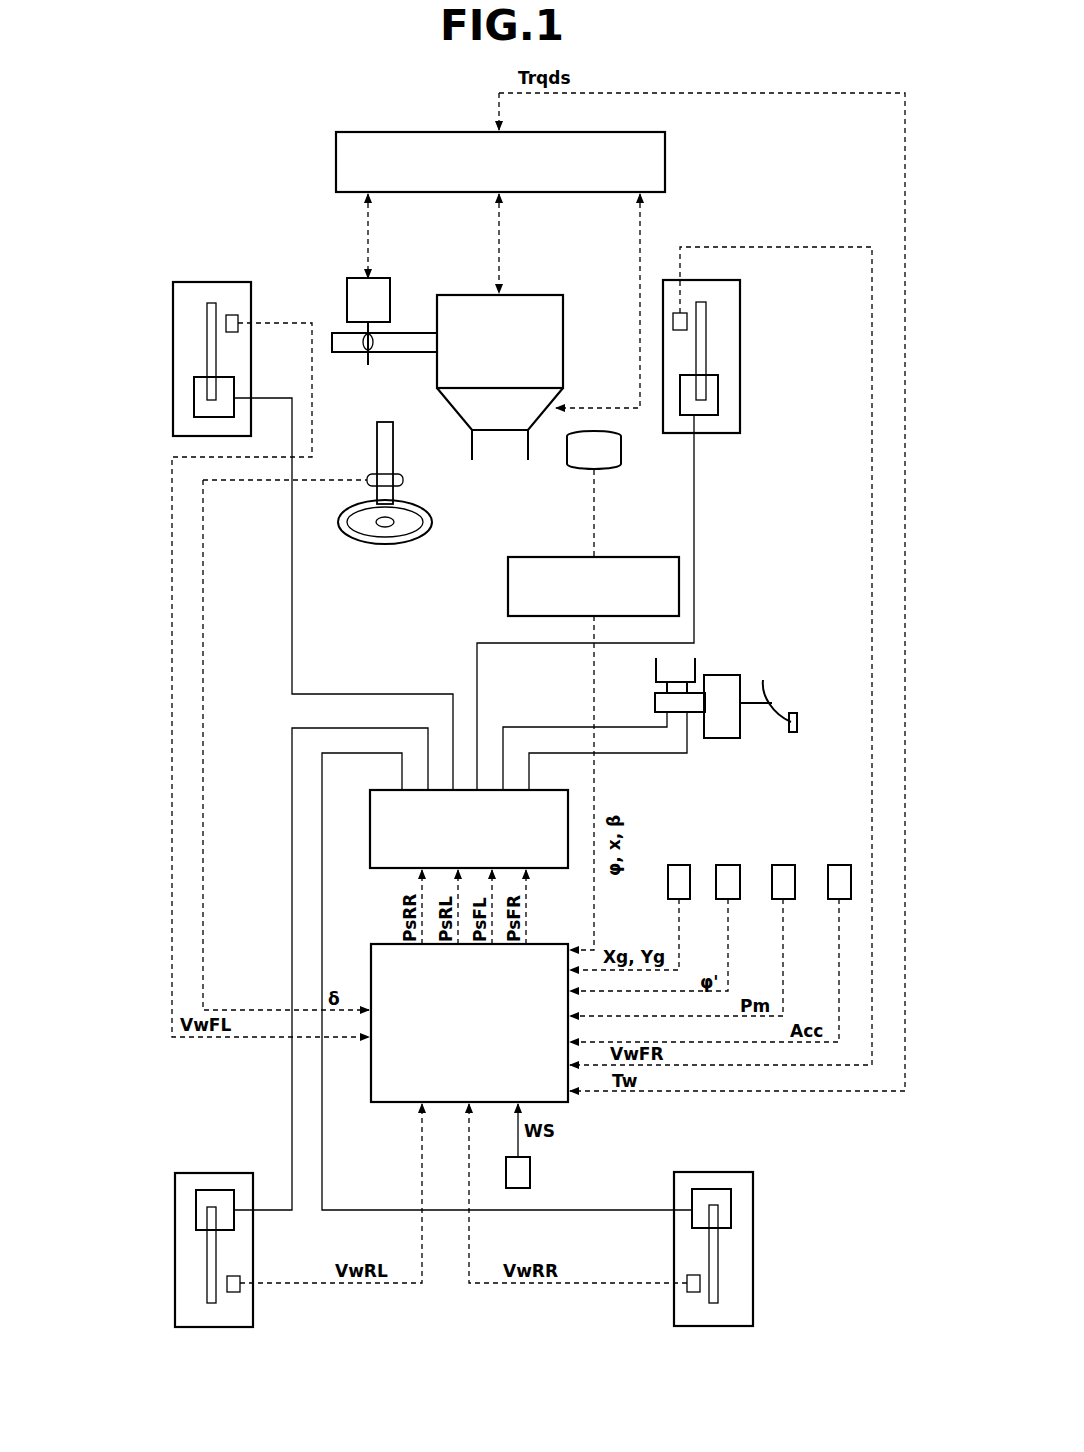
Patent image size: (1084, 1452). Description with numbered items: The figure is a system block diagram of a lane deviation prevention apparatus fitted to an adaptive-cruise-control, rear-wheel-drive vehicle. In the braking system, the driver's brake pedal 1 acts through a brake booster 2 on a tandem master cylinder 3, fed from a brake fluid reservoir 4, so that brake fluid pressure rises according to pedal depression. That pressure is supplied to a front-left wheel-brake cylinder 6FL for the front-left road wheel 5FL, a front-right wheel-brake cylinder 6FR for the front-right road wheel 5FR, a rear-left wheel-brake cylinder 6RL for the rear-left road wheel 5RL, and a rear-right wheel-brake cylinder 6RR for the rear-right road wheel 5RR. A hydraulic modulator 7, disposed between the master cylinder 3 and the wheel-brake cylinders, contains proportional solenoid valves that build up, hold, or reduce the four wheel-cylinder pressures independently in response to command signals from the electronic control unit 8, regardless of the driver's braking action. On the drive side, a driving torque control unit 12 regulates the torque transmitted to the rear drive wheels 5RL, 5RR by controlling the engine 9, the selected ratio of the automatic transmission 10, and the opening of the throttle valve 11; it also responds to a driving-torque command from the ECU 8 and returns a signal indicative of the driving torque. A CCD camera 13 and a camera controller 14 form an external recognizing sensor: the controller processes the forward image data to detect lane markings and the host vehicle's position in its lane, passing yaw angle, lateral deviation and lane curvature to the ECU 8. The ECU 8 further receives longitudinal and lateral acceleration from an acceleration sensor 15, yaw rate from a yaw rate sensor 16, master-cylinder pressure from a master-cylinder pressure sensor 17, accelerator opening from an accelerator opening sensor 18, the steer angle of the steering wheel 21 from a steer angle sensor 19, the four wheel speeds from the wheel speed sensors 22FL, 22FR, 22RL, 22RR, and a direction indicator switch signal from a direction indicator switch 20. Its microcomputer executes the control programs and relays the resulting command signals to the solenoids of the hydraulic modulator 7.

The brake pedal 1 is at (797, 722).
The brake booster 2 is at (722, 738).
The master cylinder 3 is at (655, 702).
The brake fluid reservoir 4 is at (695, 668).
The front-left road wheel 5FL is at (251, 300).
The front-right road wheel 5FR is at (740, 310).
The rear-left road wheel 5RL is at (215, 1173).
The rear-right road wheel 5RR is at (715, 1172).
The front-left wheel-brake cylinder 6FL is at (194, 400).
The front-right wheel-brake cylinder 6FR is at (718, 400).
The rear-left wheel-brake cylinder 6RL is at (196, 1210).
The rear-right wheel-brake cylinder 6RR is at (731, 1208).
The hydraulic modulator 7 is at (380, 870).
The electronic control unit 8 is at (560, 946).
The engine 9 is at (540, 297).
The automatic transmission 10 is at (454, 417).
The throttle valve 11 is at (360, 362).
The driving torque control unit 12 is at (665, 163).
The CCD camera 13 is at (621, 452).
The camera controller 14 is at (625, 557).
The acceleration sensor 15 is at (679, 865).
The yaw rate sensor 16 is at (728, 865).
The master-cylinder pressure sensor 17 is at (783, 865).
The accelerator opening sensor 18 is at (839, 865).
The steer angle sensor 19 is at (403, 480).
The direction indicator switch 20 is at (530, 1172).
The steering wheel 21 is at (432, 522).
The front-left wheel speed sensor 22FL is at (232, 315).
The front-right wheel speed sensor 22FR is at (673, 320).
The rear-left wheel speed sensor 22RL is at (234, 1292).
The rear-right wheel speed sensor 22RR is at (694, 1292).